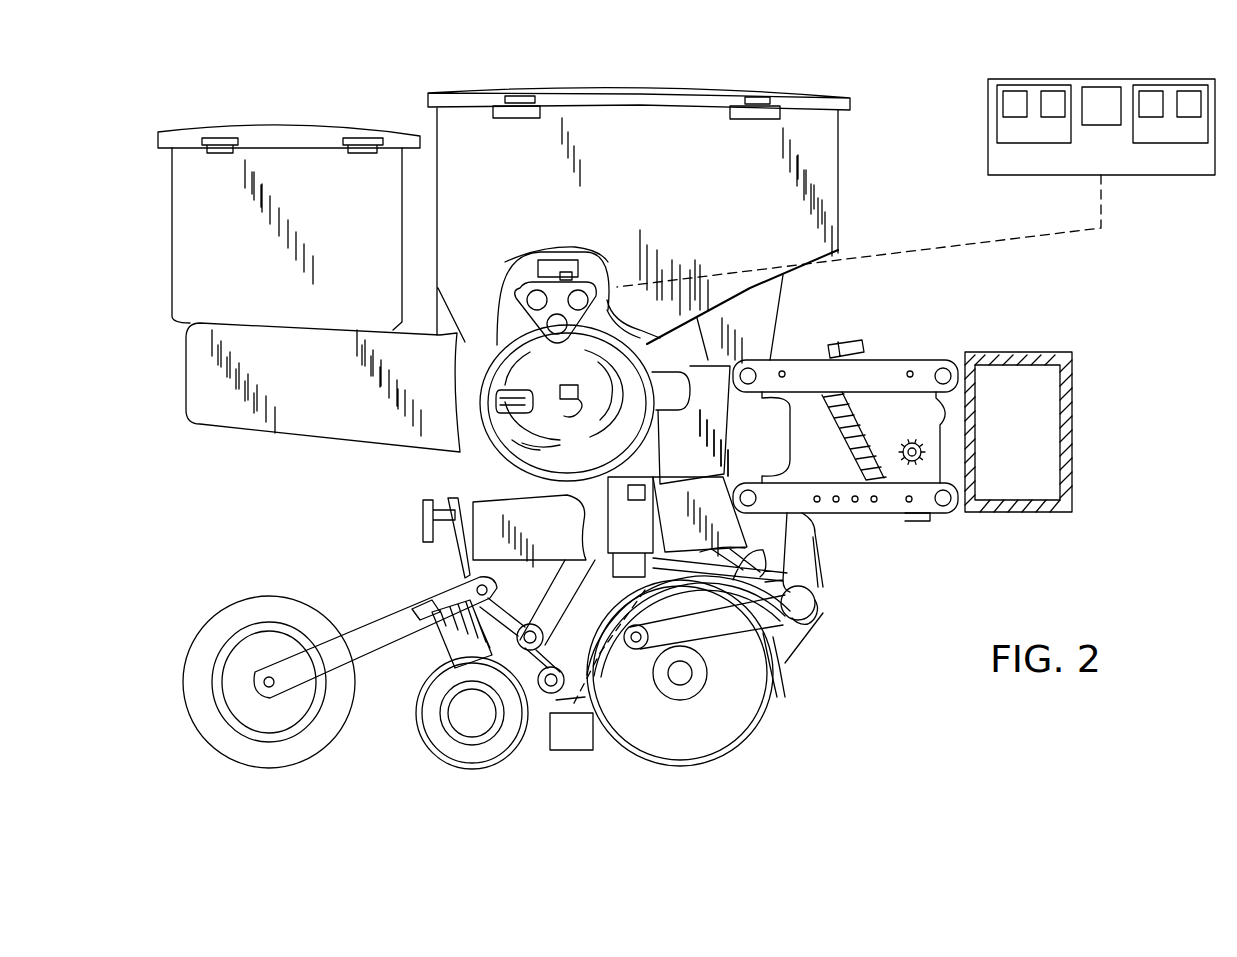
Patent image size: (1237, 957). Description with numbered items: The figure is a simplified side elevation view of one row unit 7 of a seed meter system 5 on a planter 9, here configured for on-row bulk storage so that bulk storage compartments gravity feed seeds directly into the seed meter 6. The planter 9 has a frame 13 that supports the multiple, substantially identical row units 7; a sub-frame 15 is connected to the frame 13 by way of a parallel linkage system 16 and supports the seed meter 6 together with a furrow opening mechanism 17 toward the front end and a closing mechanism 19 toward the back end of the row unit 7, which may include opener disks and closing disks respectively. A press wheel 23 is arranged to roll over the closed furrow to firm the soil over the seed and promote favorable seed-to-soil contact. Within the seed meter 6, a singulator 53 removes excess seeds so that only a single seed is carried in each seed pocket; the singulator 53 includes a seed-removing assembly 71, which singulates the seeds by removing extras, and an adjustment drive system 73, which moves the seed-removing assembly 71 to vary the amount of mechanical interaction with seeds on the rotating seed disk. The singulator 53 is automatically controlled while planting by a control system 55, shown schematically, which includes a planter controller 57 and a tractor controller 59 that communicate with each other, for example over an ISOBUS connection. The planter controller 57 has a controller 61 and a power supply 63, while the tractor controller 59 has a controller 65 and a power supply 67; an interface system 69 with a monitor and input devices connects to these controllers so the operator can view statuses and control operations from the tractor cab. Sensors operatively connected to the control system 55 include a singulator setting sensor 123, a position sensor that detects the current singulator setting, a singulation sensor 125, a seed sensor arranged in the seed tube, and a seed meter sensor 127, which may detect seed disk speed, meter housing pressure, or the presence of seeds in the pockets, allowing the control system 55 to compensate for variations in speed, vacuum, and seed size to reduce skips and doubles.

The seed meter system 5 is at (483, 484).
The seed meter 6 is at (470, 430).
The row unit 7 is at (214, 477).
The planter 9 is at (950, 389).
The frame 13 is at (1040, 348).
The sub-frame 15 is at (828, 358).
The parallel linkage system 16 is at (902, 355).
The furrow opening mechanism 17 is at (746, 766).
The closing mechanism 19 is at (409, 746).
The press wheel 23 is at (228, 607).
The singulator 53 is at (512, 282).
The control system 55 is at (1058, 130).
The planter controller 57 is at (1034, 158).
The tractor controller 59 is at (1171, 158).
The controller 61 is at (1013, 90).
The power supply 63 is at (1053, 90).
The controller 65 is at (1150, 90).
The power supply 67 is at (1189, 90).
The interface system 69 is at (1105, 136).
The seed-removing assembly 71 is at (489, 323).
The adjustment drive system 73 is at (544, 260).
The singulator setting sensor 123 is at (565, 276).
The singulation sensor 125 is at (662, 592).
The seed meter sensor 127 is at (535, 409).